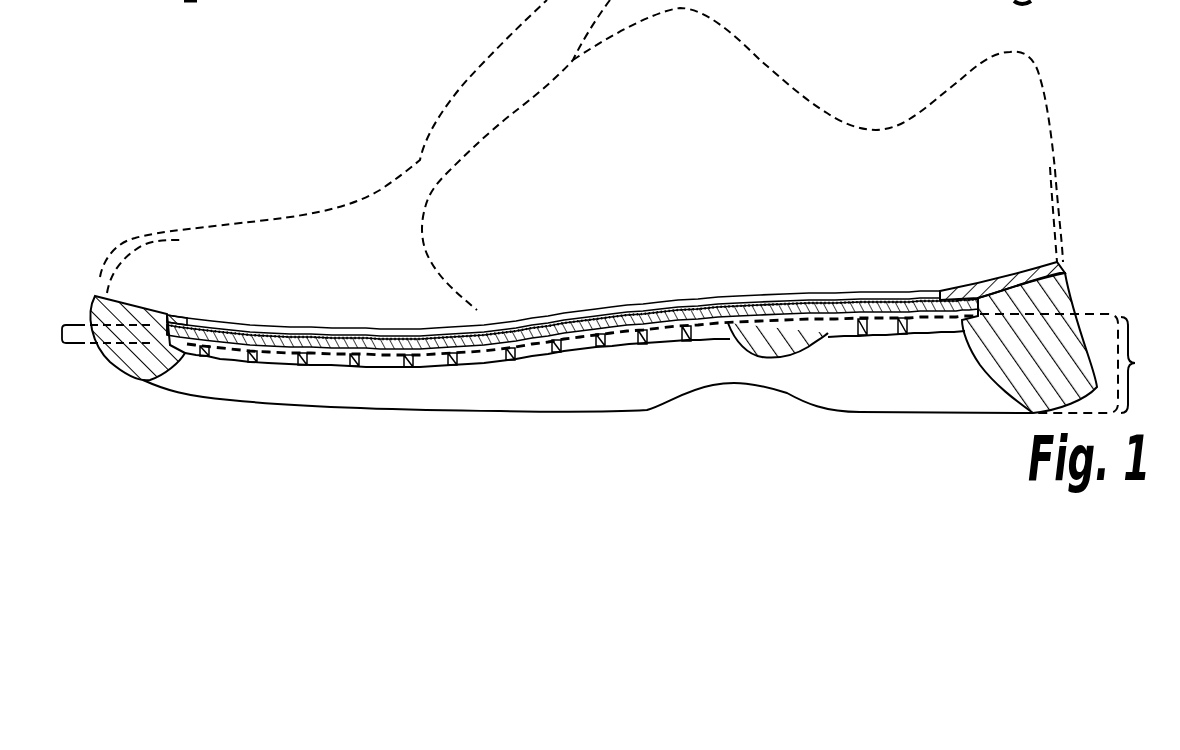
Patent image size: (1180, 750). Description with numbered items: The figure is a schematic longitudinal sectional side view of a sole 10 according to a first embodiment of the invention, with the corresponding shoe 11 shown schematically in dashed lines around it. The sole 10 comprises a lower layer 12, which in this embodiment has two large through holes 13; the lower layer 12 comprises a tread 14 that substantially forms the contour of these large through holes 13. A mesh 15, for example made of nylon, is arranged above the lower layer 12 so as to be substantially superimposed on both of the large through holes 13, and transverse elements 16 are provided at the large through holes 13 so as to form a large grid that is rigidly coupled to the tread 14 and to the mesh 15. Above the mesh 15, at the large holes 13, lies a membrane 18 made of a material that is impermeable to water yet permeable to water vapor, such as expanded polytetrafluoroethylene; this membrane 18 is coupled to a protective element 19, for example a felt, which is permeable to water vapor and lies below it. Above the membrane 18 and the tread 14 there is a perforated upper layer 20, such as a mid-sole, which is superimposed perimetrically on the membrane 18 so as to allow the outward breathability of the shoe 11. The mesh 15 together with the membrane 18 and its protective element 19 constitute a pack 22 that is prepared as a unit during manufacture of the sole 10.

The sole 10 is at (205, 420).
The shoe 11 is at (826, 96).
The lower layer 12 is at (1054, 337).
The large through holes 13 is at (534, 388).
The tread 14 is at (130, 378).
The mesh 15 is at (665, 330).
The transverse elements 16 is at (353, 386).
The membrane 18 is at (243, 335).
The protective element 19 is at (333, 352).
The perforated upper layer 20 is at (181, 305).
The pack 22 is at (44, 327).